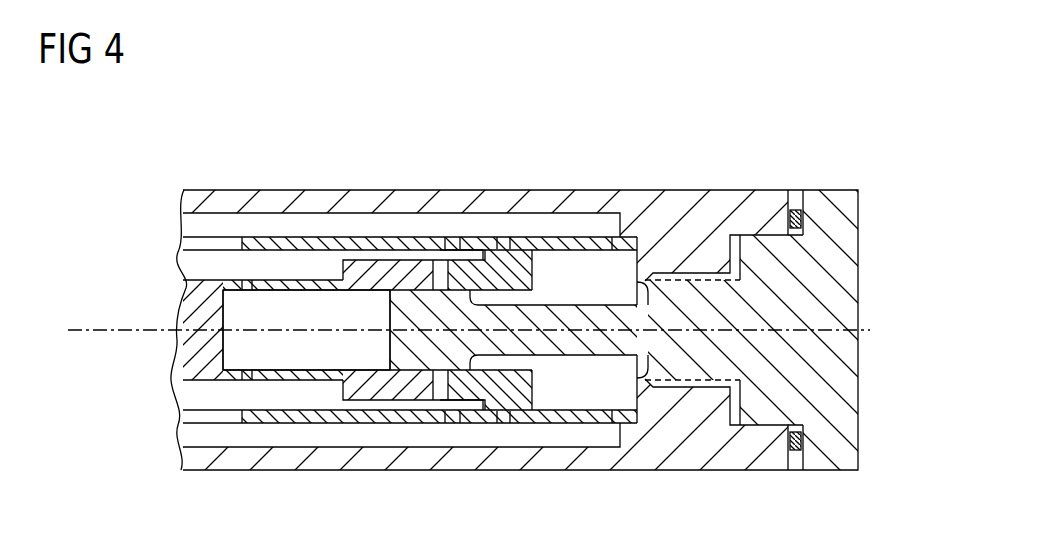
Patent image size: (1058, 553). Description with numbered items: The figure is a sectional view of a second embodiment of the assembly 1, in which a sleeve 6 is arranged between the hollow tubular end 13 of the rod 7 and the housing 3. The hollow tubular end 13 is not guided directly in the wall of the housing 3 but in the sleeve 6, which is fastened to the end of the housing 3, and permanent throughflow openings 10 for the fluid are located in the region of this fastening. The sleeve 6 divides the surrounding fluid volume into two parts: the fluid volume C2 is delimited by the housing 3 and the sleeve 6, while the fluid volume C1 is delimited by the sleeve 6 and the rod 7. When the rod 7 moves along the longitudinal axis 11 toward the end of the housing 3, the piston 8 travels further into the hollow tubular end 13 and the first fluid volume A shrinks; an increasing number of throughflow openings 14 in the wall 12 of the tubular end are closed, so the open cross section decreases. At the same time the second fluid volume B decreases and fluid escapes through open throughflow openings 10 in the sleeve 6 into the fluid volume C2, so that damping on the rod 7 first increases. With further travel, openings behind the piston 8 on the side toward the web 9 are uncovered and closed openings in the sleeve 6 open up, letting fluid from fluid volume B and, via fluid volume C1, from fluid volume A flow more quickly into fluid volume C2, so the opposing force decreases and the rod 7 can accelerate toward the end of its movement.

The assembly 1 is at (768, 117).
The housing 3 is at (677, 202).
The sleeve 6 is at (380, 415).
The rod 7 is at (185, 350).
The piston 8 is at (410, 302).
The web 9 is at (587, 317).
The throughflow openings 10 is at (207, 242).
The longitudinal axis 11 is at (87, 328).
The wall 12 is at (500, 267).
The hollow tubular end 13 is at (323, 378).
The throughflow openings 14 is at (442, 273).
The first fluid volume A is at (327, 310).
The second fluid volume B is at (560, 393).
The fluid volume C1 is at (290, 397).
The fluid volume C2 is at (303, 228).